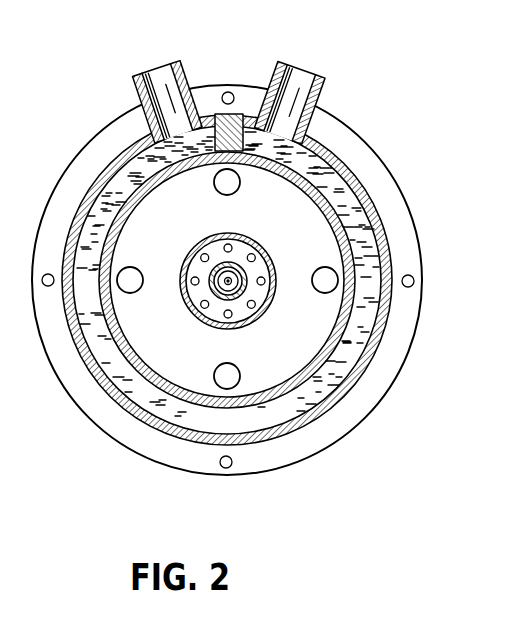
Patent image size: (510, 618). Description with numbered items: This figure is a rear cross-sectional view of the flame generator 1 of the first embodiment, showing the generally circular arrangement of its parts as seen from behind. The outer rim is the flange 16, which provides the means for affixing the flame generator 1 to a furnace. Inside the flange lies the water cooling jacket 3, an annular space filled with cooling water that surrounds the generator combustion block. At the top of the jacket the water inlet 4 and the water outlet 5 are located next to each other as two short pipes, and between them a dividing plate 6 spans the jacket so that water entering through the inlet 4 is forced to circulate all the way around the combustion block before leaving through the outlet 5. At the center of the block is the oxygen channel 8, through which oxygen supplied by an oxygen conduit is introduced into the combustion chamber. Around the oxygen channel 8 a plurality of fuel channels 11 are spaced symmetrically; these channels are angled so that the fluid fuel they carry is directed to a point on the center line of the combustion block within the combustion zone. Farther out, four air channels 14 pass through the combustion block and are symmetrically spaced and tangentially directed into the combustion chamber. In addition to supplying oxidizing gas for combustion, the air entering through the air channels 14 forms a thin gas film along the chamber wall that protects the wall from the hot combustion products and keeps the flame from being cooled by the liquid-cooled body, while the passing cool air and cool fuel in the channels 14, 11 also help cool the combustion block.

The flame generator 1 is at (244, 250).
The water cooling jacket 3 is at (112, 188).
The water inlet 4 is at (151, 61).
The water outlet 5 is at (318, 30).
The dividing plate 6 is at (236, 114).
The oxygen channel 8 is at (222, 300).
The fuel channels 11 is at (262, 286).
The air channels 14 is at (212, 190).
The flange 16 is at (61, 201).